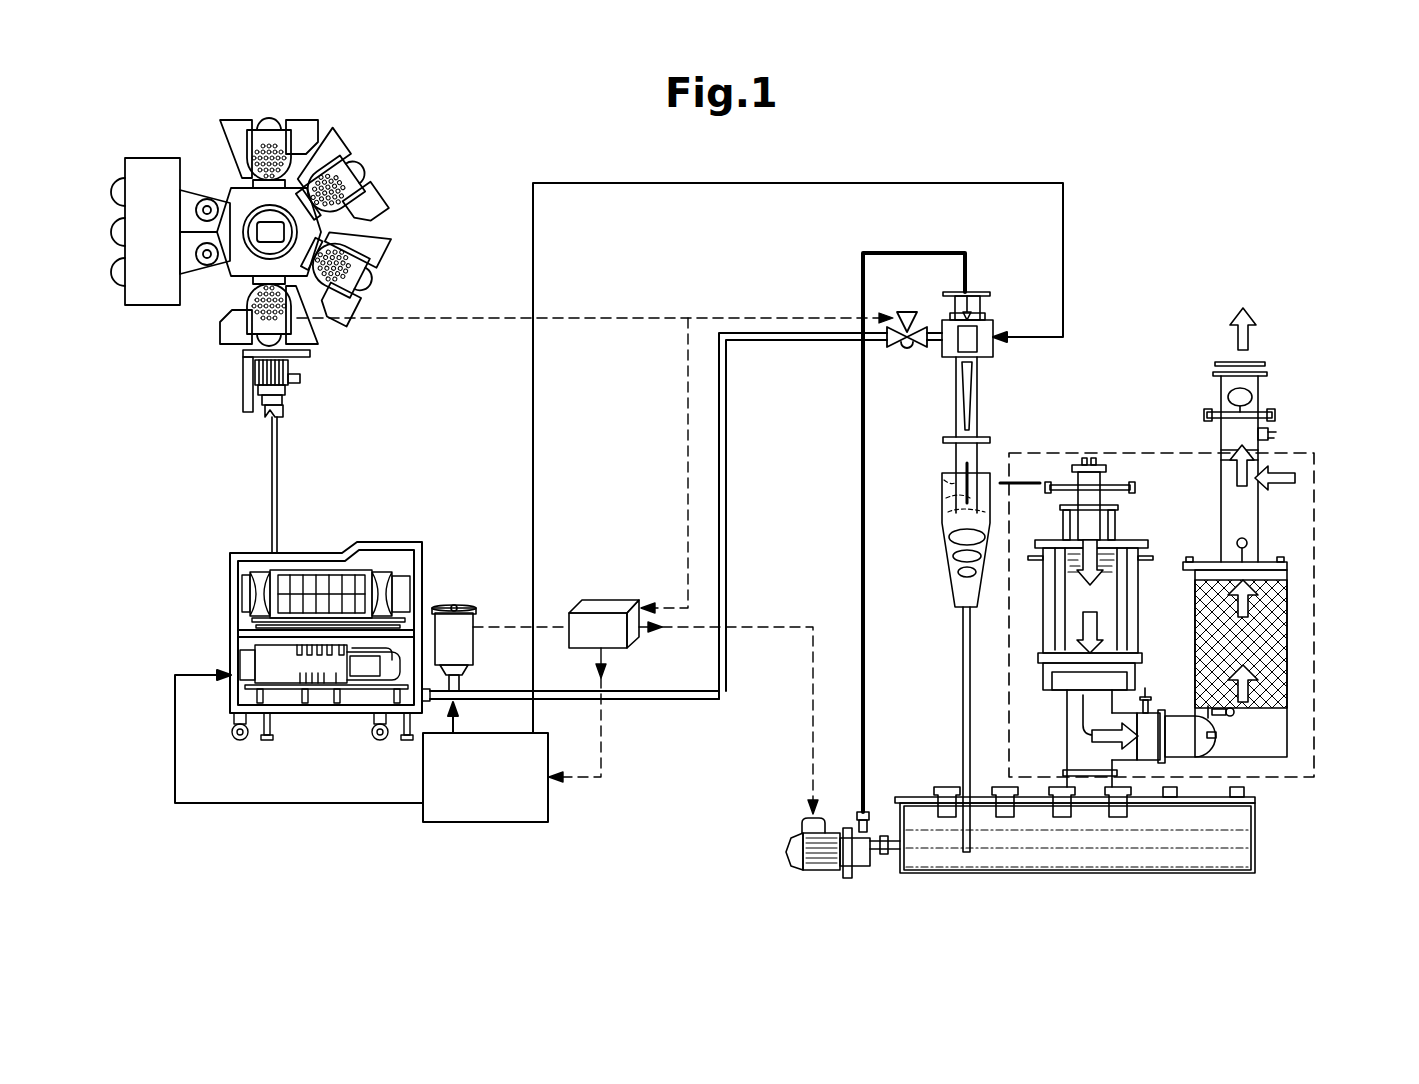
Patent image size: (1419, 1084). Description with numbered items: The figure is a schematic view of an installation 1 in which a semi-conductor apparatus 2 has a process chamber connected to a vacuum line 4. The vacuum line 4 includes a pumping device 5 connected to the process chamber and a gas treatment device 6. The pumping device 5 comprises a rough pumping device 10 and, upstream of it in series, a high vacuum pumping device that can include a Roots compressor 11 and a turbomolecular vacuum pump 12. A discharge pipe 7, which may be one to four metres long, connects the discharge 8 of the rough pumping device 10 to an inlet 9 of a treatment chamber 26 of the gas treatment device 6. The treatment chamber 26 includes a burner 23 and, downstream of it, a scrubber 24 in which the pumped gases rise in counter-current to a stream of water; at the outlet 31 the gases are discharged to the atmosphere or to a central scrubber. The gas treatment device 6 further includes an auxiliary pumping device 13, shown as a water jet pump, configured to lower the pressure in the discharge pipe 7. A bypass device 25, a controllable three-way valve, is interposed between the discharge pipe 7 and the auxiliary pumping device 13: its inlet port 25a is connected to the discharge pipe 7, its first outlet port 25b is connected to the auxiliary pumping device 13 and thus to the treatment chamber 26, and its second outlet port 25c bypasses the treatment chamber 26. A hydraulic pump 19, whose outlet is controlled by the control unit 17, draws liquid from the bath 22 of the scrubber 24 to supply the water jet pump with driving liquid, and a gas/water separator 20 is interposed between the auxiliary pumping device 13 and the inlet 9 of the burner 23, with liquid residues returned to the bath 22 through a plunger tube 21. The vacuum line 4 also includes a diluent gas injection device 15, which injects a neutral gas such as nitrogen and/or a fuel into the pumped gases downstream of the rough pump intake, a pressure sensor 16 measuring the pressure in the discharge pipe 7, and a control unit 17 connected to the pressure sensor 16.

The installation 1 is at (1030, 118).
The apparatus 2 is at (415, 178).
The vacuum line 4 is at (672, 272).
The pumping device 5 is at (440, 358).
The gas treatment device 6 is at (1237, 266).
The discharge pipe 7 is at (723, 405).
The discharge 8 is at (432, 688).
The inlet 9 is at (1033, 460).
The rough pumping device 10 is at (288, 668).
The Roots compressor 11 is at (298, 583).
The turbomolecular vacuum pump 12 is at (280, 372).
The auxiliary pumping device 13 is at (990, 290).
The diluent gas injection device 15 is at (500, 825).
The pressure sensor 16 is at (468, 606).
The control unit 17 is at (620, 605).
The hydraulic pump 19 is at (823, 858).
The gas/water separator 20 is at (942, 490).
The plunger tube 21 is at (966, 856).
The bath 22 is at (1050, 856).
The burner 23 is at (1030, 608).
The scrubber 24 is at (1282, 656).
The bypass device 25 is at (913, 370).
The inlet port 25a is at (895, 342).
The first outlet port 25b is at (912, 330).
The second outlet port 25c is at (903, 318).
The treatment chamber 26 is at (1316, 528).
The outlet 31 is at (1258, 362).